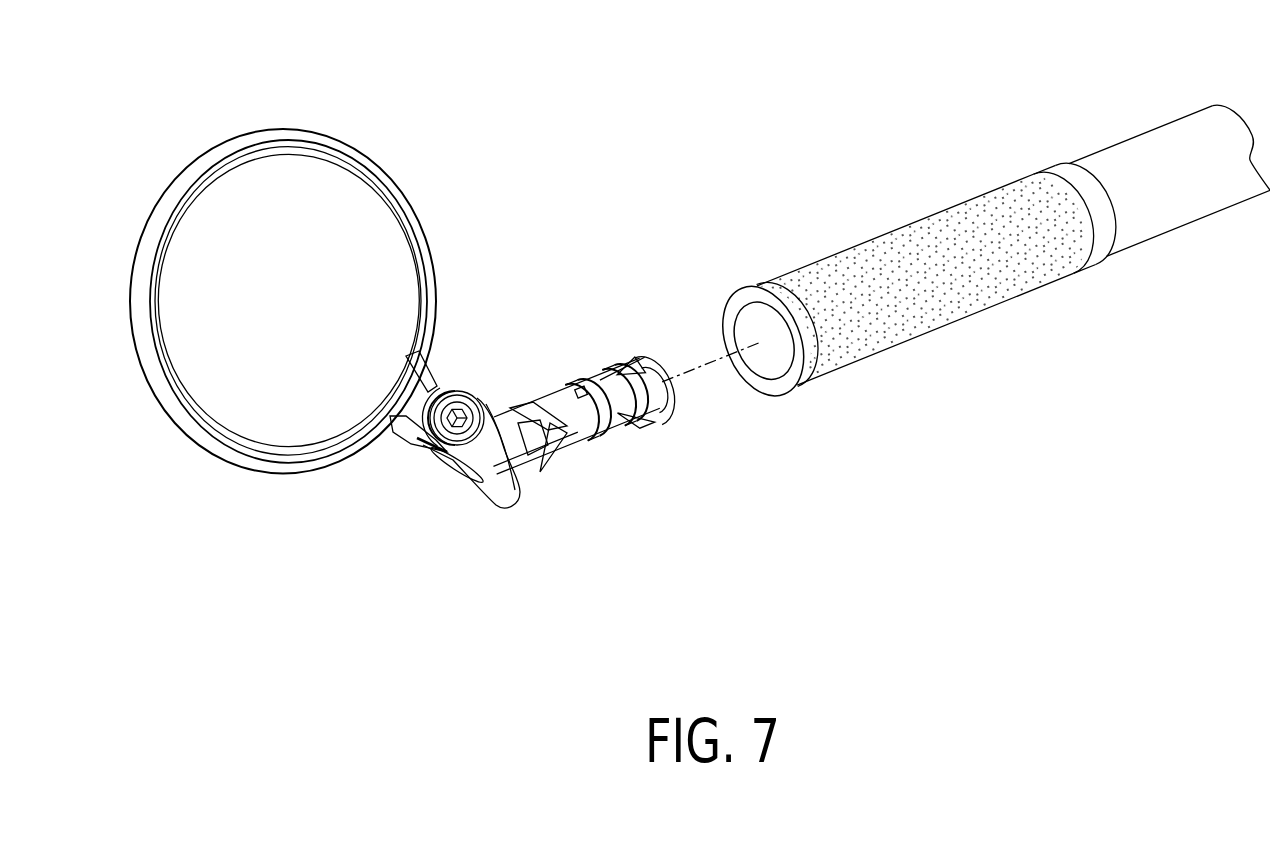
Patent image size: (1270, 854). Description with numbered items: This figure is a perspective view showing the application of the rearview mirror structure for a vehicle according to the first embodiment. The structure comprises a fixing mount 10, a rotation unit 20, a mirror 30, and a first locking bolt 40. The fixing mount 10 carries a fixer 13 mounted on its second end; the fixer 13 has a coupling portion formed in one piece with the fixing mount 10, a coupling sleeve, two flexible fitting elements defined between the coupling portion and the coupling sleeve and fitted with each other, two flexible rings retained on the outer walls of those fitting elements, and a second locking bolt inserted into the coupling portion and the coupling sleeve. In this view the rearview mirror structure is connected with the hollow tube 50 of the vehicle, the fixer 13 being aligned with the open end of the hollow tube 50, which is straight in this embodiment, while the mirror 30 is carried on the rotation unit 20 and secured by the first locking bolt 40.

The fixing mount 10 is at (493, 488).
The fixer 13 is at (602, 383).
The rotation unit 20 is at (415, 442).
The mirror 30 is at (362, 160).
The first locking bolt 40 is at (463, 402).
The hollow tube 50 is at (963, 213).